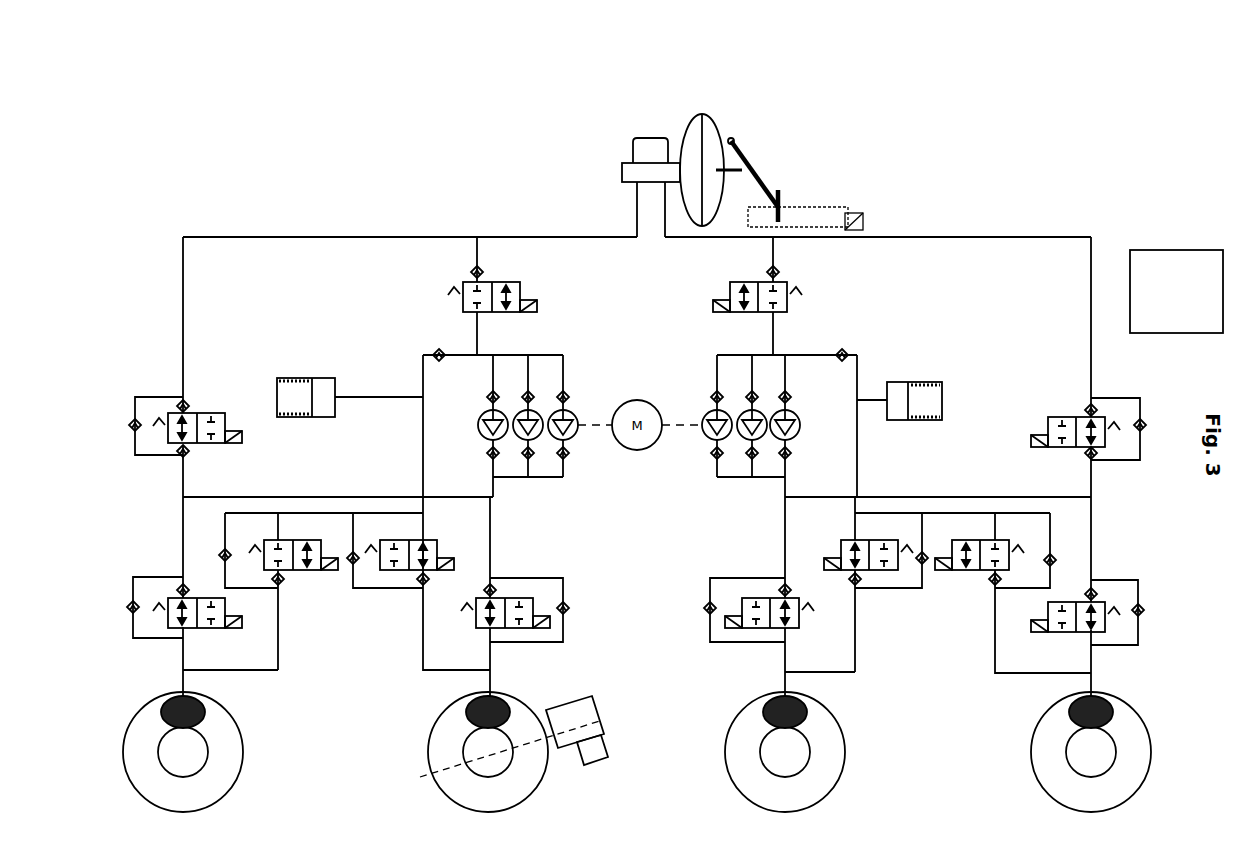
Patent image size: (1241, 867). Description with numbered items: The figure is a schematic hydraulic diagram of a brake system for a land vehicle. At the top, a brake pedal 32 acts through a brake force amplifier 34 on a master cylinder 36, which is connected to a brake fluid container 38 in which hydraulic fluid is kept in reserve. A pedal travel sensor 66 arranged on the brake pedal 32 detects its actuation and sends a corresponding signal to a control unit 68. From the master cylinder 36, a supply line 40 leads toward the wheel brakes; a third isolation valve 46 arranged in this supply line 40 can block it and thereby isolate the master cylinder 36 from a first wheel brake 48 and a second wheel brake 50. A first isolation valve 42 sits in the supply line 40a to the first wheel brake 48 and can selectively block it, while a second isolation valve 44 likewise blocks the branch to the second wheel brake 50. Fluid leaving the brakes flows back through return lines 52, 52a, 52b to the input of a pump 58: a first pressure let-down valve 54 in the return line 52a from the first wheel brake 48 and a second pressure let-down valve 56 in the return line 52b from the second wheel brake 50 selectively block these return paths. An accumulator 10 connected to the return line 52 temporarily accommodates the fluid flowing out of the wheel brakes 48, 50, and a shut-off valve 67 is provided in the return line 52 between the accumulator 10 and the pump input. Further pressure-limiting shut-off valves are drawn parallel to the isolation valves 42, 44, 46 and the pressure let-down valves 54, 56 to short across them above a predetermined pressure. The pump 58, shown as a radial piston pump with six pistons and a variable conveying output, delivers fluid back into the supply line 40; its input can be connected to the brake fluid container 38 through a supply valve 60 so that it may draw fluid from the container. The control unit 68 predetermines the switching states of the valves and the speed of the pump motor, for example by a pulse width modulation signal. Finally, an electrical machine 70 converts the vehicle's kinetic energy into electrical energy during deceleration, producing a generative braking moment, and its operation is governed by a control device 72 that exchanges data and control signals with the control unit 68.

The accumulator 10 is at (312, 375).
The brake pedal 32 is at (790, 196).
The brake force amplifier 34 is at (724, 130).
The master cylinder 36 is at (620, 172).
The brake fluid container 38 is at (627, 140).
The supply line 40 is at (340, 236).
The supply line 40a is at (183, 513).
The first isolation valve 42 is at (248, 621).
The second isolation valve 44 is at (521, 596).
The third isolation valve 46 is at (208, 410).
The first wheel brake 48 is at (210, 718).
The second wheel brake 50 is at (462, 720).
The return line 52 is at (423, 447).
The return line 52a is at (235, 671).
The return line 52b is at (422, 672).
The first pressure let-down valve 54 is at (306, 582).
The second pressure let-down valve 56 is at (393, 582).
The pump 58 is at (581, 414).
The supply valve 60 is at (507, 278).
The pedal travel sensor 66 is at (868, 222).
The shut-off valve 67 is at (434, 347).
The control unit 68 is at (1175, 248).
The electrical machine 70 is at (581, 702).
The control device 72 is at (616, 742).